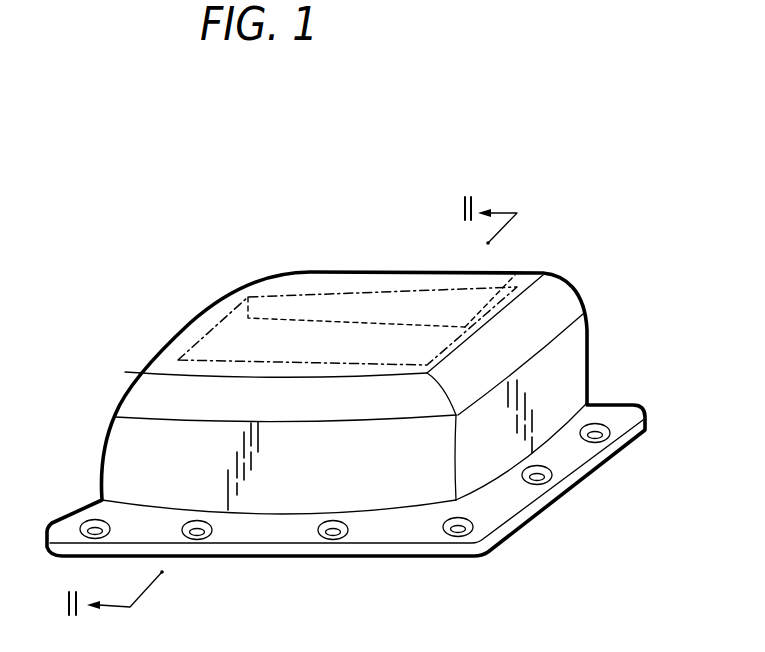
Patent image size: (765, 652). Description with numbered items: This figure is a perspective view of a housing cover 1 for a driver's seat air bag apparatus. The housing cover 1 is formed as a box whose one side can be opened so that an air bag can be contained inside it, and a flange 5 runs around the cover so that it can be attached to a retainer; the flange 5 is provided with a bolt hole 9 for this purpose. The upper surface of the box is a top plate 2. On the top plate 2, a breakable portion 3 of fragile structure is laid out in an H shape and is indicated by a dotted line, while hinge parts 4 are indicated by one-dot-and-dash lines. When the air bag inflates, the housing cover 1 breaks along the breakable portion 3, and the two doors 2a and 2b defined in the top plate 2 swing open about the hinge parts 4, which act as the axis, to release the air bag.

The housing cover 1 is at (172, 289).
The top plate 2 is at (524, 277).
The door 2a is at (353, 300).
The door 2b is at (212, 335).
The breakable portion 3 is at (247, 300).
The hinge parts 4 is at (437, 285).
The flange 5 is at (611, 432).
The bolt hole 9 is at (542, 484).